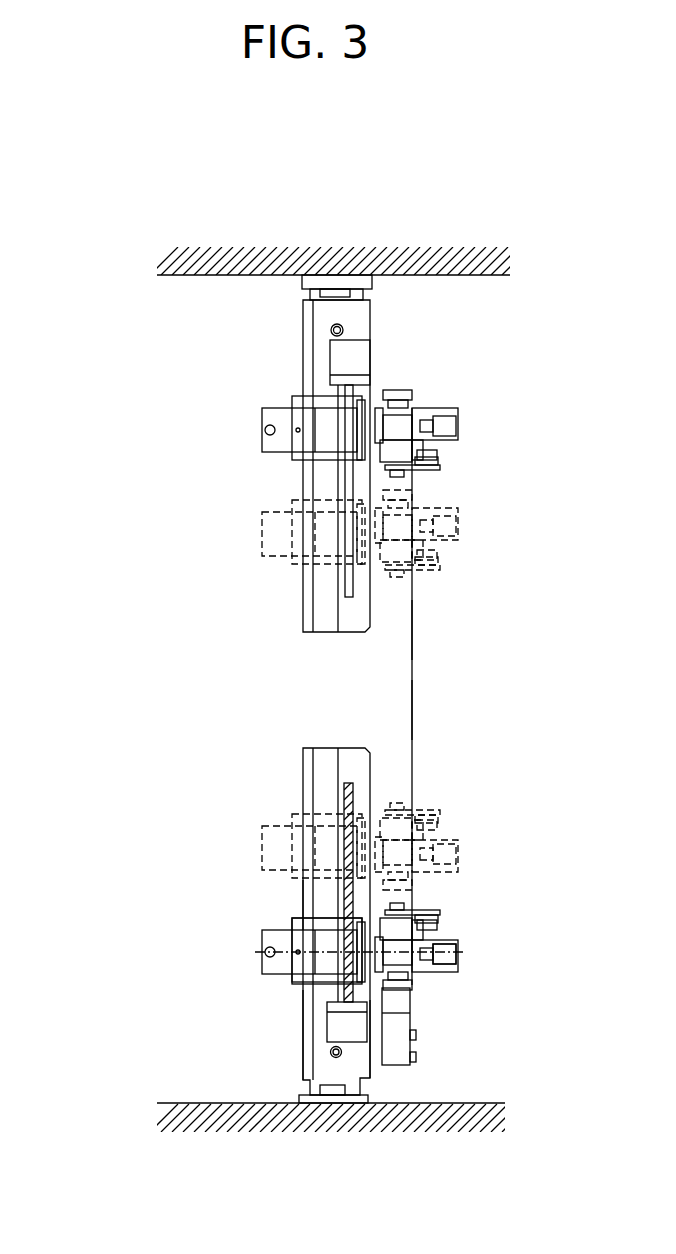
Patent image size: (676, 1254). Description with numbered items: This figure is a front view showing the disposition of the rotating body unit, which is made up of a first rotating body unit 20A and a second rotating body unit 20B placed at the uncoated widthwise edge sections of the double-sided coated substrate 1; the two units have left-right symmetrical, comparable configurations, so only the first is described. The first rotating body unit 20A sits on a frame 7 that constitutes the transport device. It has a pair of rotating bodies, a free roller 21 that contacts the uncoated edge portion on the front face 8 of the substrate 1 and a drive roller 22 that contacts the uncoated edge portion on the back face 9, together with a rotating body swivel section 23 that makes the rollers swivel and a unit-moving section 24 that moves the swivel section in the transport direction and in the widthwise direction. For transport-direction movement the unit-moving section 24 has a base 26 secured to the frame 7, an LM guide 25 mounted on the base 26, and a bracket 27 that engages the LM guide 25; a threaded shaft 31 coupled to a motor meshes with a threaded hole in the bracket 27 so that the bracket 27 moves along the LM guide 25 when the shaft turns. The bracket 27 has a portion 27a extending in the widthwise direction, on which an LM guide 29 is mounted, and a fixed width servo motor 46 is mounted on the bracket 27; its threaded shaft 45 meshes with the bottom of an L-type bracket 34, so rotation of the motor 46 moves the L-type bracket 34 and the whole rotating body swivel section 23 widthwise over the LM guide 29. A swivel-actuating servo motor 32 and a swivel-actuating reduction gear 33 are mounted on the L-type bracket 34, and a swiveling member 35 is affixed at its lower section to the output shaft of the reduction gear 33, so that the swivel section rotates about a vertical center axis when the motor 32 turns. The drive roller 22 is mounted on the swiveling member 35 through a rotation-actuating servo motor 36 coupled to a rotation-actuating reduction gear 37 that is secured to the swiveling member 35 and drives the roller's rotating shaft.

The double-sided coated substrate 1 is at (415, 672).
The frame 7 is at (170, 1103).
The front face 8 is at (413, 637).
The back face 9 is at (408, 692).
The first rotating body unit 20A is at (300, 971).
The second rotating body unit 20B is at (230, 395).
The free roller 21 is at (400, 913).
The drive roller 22 is at (310, 865).
The rotating body swivel section 23 is at (475, 1002).
The unit-moving section 24 is at (283, 1025).
The LM guide 25 is at (333, 1090).
The base 26 is at (368, 1098).
The bracket 27 is at (368, 1075).
The portion extending in the widthwise direction 27a is at (370, 772).
The LM guide 29 is at (322, 790).
The threaded shaft 31 is at (335, 1057).
The swivel-actuating servo motor 32 is at (262, 962).
The swivel-actuating reduction gear 33 is at (302, 910).
The L-type bracket 34 is at (292, 922).
The swiveling member 35 is at (457, 968).
The rotation-actuating servo motor 36 is at (413, 1047).
The rotation-actuating reduction gear 37 is at (413, 1003).
The threaded shaft 45 is at (352, 802).
The fixed width servo motor 46 is at (330, 1040).